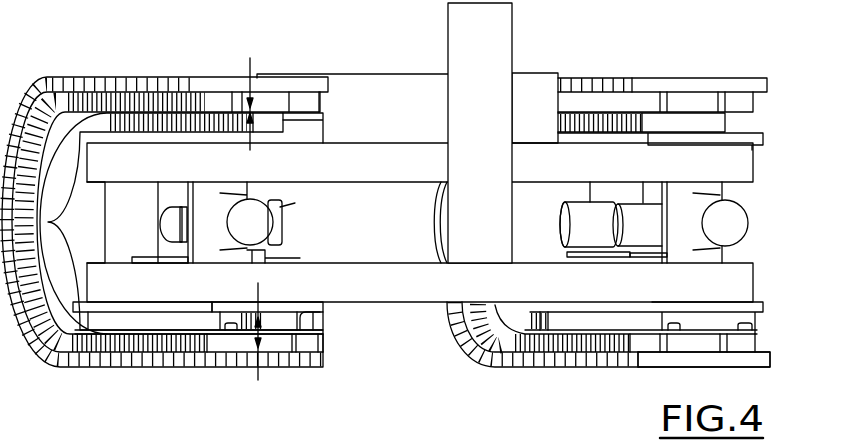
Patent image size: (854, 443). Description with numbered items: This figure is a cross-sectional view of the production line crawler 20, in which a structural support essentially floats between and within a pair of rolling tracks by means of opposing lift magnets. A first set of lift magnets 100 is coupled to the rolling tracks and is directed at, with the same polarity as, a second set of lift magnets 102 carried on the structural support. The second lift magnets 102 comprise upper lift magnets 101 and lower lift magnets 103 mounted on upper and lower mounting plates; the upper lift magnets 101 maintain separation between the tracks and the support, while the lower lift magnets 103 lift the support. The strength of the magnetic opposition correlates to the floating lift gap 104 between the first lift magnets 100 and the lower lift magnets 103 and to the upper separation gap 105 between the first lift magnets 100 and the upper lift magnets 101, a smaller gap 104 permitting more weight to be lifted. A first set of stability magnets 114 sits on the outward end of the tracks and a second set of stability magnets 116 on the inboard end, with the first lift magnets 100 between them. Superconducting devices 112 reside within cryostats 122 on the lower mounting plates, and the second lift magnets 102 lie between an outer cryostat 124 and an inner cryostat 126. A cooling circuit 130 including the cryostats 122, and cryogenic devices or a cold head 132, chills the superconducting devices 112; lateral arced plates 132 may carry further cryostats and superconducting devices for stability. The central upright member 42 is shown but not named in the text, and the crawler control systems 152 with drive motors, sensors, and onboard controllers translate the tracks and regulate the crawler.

The production line crawler 20 is at (50, 80).
The support column 42 is at (512, 30).
The first set of lift magnets 100 is at (265, 97).
The upper lift magnets 101 is at (268, 124).
The second set of lift magnets 102 is at (290, 123).
The lower lift magnets 103 is at (283, 300).
The floating lift gap 104 is at (258, 290).
The upper separation gap 105 is at (250, 60).
The superconducting devices 112 is at (231, 331).
The first set of stability magnets 114 is at (745, 343).
The second set of stability magnets 116 is at (650, 348).
The cryostats 122 is at (215, 98).
The outer cryostat 124 is at (320, 313).
The inner cryostat 126 is at (188, 322).
The cooling circuit 130 is at (302, 230).
The lateral arced plates 132 is at (280, 212).
The crawler control systems 152 is at (537, 72).